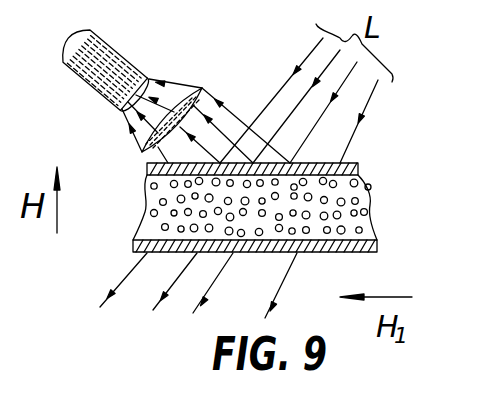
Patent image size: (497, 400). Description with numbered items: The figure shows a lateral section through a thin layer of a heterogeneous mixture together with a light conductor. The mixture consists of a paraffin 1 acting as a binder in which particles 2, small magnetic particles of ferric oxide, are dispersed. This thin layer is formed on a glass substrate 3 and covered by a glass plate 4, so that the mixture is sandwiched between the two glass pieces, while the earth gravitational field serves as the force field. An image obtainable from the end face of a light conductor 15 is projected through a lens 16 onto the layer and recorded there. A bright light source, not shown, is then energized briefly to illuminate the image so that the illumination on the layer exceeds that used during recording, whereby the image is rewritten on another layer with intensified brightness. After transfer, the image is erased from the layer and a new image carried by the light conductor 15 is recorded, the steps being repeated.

The paraffin 1 is at (282, 188).
The particles 2 is at (372, 224).
The glass substrate 3 is at (378, 246).
The glass plate 4 is at (355, 163).
The light conductor 15 is at (84, 80).
The lens 16 is at (181, 86).